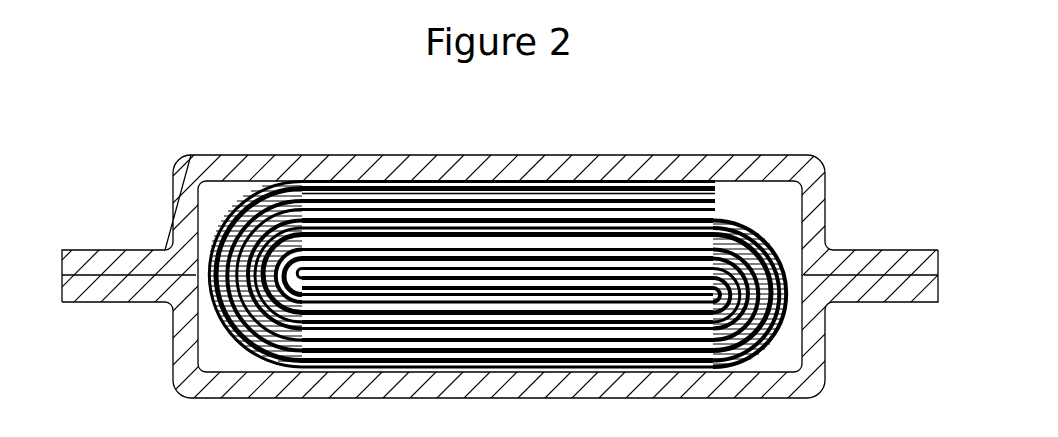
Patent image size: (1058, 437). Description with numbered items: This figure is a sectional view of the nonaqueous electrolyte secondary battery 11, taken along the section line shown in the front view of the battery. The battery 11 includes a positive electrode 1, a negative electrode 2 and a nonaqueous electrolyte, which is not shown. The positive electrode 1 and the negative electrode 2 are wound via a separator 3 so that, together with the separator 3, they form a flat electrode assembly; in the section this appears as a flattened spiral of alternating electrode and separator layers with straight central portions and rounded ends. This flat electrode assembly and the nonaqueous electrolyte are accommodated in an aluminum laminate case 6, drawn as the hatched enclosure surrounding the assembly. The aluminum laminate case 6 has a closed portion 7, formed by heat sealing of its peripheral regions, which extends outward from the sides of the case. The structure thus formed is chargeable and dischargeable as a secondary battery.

The positive electrode 1 is at (707, 210).
The negative electrode 2 is at (715, 188).
The separator 3 is at (655, 186).
The aluminum laminate case 6 is at (805, 152).
The closed portion 7 is at (887, 258).
The nonaqueous electrolyte secondary battery 11 is at (887, 107).